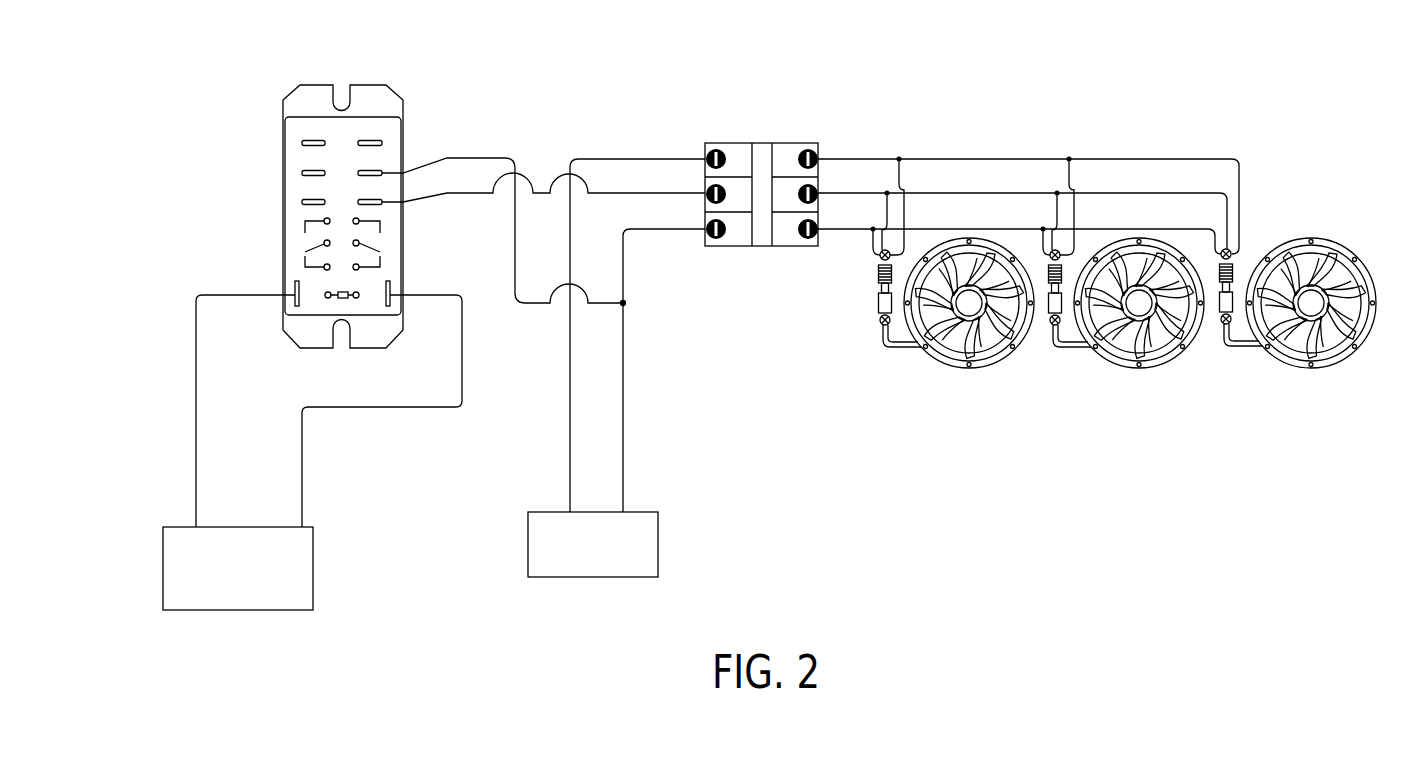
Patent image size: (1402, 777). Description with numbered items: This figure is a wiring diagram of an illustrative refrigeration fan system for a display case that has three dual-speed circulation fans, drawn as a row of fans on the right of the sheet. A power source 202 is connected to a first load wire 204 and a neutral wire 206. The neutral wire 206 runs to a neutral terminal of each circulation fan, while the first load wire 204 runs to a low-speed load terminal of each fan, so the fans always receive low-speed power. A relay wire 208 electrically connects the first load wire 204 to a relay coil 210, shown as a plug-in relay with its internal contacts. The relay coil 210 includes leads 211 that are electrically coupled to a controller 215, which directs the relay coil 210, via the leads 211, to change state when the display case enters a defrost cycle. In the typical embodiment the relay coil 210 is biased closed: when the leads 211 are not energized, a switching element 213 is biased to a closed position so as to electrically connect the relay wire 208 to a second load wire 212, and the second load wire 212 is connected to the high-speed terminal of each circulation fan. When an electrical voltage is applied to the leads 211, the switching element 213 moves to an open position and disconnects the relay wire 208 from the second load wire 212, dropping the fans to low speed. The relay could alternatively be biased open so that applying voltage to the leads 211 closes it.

The power source 202 is at (658, 550).
The first load wire 204 is at (623, 380).
The neutral wire 206 is at (569, 380).
The relay wire 208 is at (513, 268).
The relay coil 210 is at (334, 216).
The leads 211 is at (196, 390).
The second load wire 212 is at (528, 178).
The switching element 213 is at (372, 245).
The controller 215 is at (313, 573).